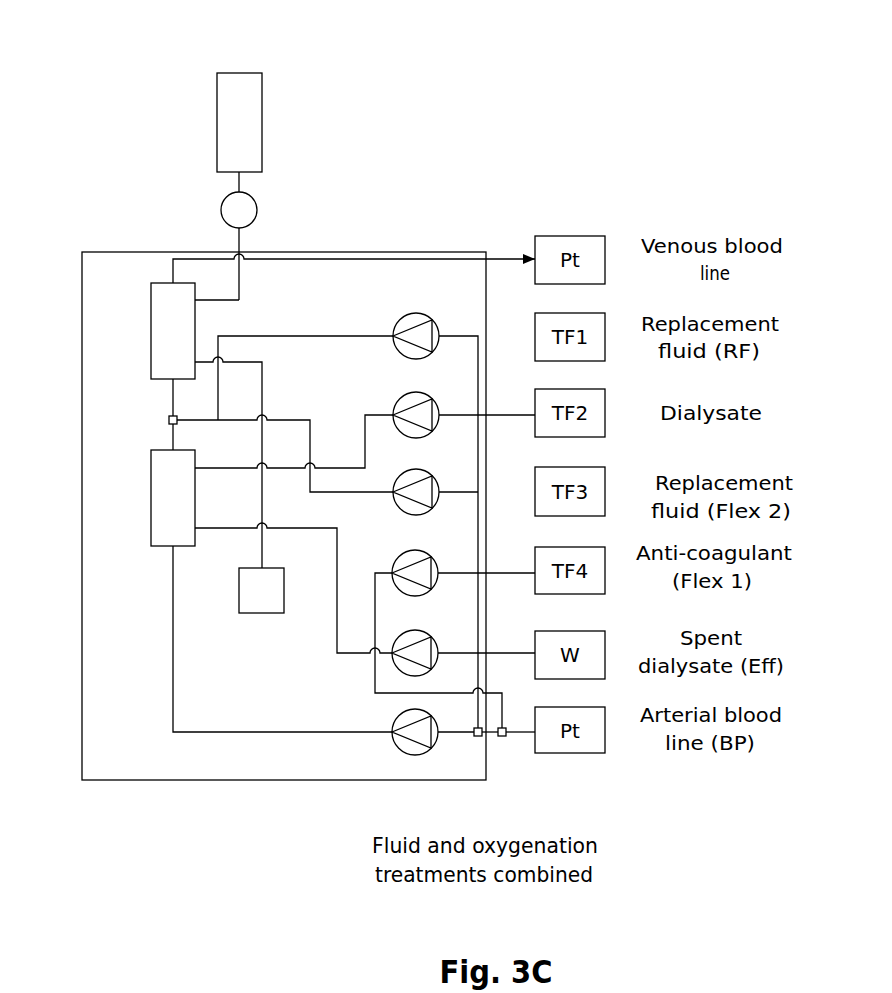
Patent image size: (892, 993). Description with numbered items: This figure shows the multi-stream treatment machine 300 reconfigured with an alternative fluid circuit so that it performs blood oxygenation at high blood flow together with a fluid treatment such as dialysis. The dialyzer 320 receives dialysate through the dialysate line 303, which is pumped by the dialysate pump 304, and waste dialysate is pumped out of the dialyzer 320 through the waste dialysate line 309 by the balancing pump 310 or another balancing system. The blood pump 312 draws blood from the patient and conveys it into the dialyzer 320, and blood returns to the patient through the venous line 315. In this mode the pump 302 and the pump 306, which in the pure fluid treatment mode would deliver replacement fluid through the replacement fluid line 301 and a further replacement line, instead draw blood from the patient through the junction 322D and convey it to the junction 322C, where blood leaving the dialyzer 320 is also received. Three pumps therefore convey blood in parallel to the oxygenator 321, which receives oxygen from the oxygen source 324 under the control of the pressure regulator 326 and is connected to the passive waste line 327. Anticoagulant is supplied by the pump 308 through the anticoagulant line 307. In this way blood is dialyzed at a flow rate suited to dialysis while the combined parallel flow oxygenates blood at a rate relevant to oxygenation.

The multi-stream treatment machine 300 is at (162, 738).
The replacement fluid line 301 is at (305, 352).
The pump 302 is at (463, 508).
The dialysate line 303 is at (294, 441).
The dialysate pump 304 is at (464, 401).
The pump 306 is at (463, 476).
The anticoagulant line 307 is at (416, 650).
The pump 308 is at (463, 556).
The waste dialysate line 309 is at (293, 596).
The balancing pump 310 is at (463, 636).
The blood pump 312 is at (462, 714).
The venous line 315 is at (354, 228).
The dialyzer 320 is at (246, 591).
The oxygenator 321 is at (147, 346).
The junction 322C is at (242, 453).
The junction 322D is at (508, 757).
The oxygen source 324 is at (236, 98).
The pressure regulator 326 is at (260, 235).
The passive waste line 327 is at (239, 485).